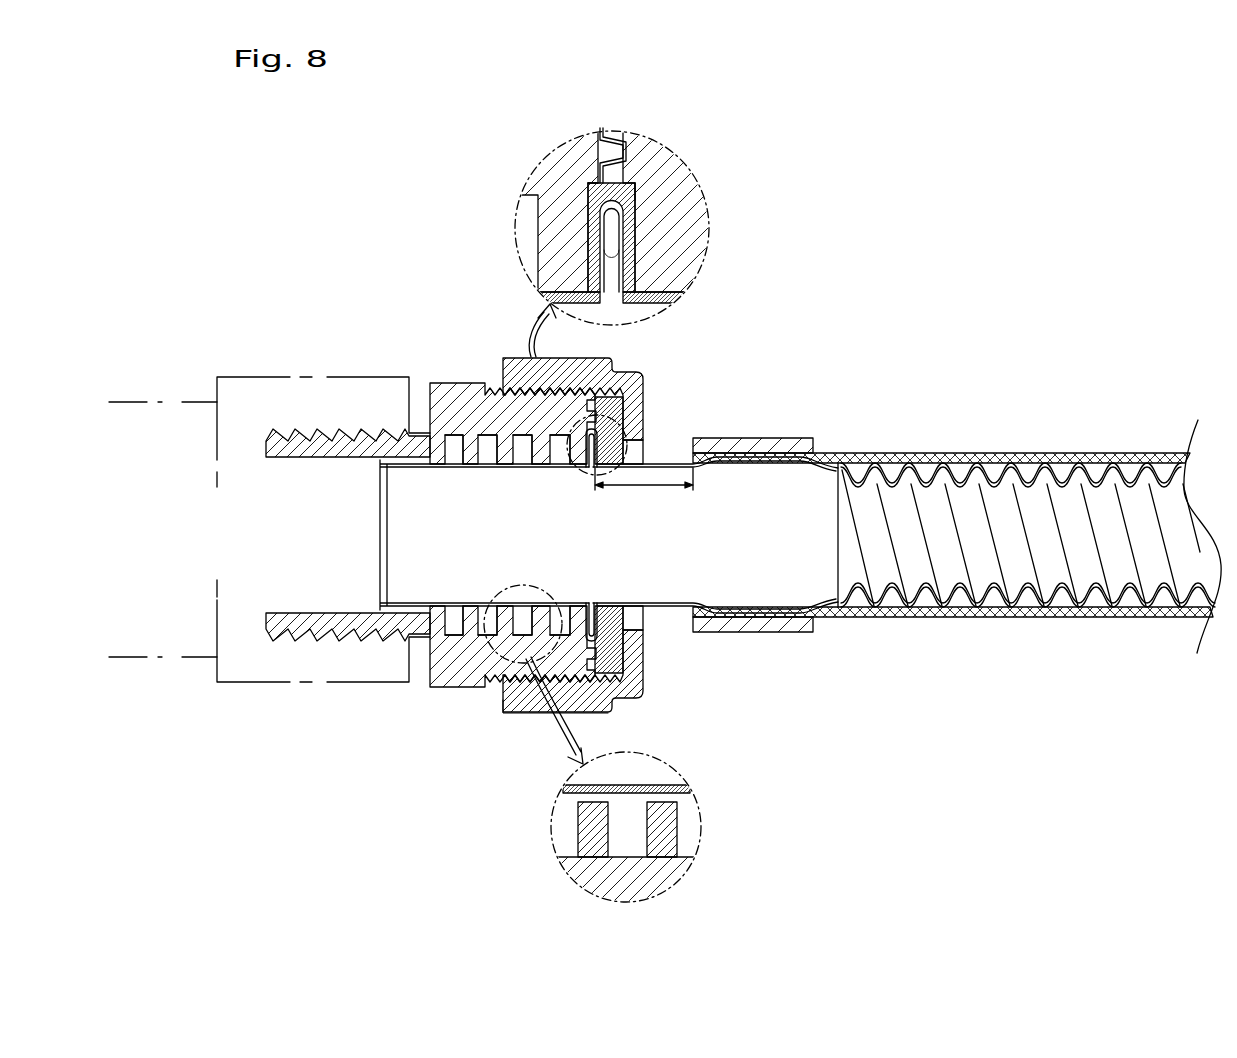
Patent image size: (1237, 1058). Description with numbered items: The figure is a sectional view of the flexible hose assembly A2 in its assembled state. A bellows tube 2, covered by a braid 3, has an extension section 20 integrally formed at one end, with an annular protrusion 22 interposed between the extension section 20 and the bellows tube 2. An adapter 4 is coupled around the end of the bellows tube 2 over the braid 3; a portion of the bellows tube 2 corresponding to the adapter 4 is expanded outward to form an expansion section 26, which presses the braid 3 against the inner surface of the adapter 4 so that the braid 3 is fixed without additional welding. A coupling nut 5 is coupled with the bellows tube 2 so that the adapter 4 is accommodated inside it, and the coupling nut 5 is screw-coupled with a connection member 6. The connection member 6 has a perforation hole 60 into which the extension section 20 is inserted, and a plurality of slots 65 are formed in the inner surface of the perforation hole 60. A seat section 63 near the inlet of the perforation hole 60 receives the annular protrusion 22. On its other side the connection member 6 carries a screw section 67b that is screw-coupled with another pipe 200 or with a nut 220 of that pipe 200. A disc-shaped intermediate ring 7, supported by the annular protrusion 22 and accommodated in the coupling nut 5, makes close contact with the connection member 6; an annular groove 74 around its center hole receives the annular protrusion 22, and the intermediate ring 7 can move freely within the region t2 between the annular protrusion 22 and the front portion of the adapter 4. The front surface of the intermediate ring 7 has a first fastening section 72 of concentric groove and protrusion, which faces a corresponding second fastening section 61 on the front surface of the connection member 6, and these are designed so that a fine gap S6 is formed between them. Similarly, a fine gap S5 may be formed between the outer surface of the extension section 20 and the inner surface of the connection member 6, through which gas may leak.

The flexible hose assembly A2 is at (391, 237).
The another pipe 200 is at (160, 400).
The nut of another pipe 220 is at (290, 377).
The screw section 67b is at (334, 433).
The connection member 6 is at (424, 378).
The slots 65 is at (488, 440).
The perforation hole 60 is at (613, 606).
The expansion section 26 is at (748, 612).
The first fastening section 72 is at (618, 405).
The second fastening section 61 is at (634, 688).
The intermediate ring 7 is at (605, 702).
The coupling nut 5 is at (523, 714).
The adapter 4 is at (758, 438).
The braid 3 is at (1037, 457).
The bellows tube 2 is at (960, 497).
The region t2 is at (644, 492).
The seat section 63 is at (596, 182).
The fine gap S6 is at (600, 133).
The annular protrusion 22 is at (636, 186).
The annular groove 74 is at (614, 252).
The extension section 20 is at (455, 612).
The fine gap S5 is at (666, 800).